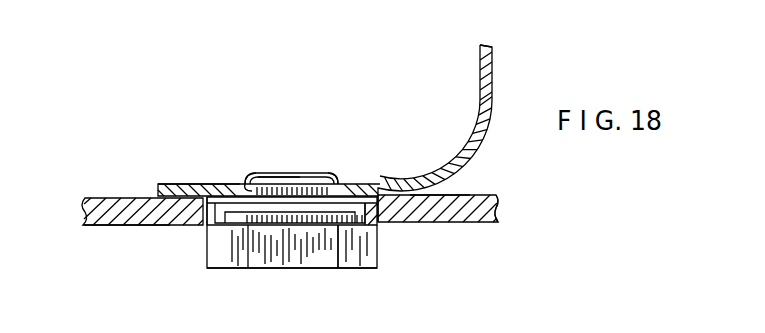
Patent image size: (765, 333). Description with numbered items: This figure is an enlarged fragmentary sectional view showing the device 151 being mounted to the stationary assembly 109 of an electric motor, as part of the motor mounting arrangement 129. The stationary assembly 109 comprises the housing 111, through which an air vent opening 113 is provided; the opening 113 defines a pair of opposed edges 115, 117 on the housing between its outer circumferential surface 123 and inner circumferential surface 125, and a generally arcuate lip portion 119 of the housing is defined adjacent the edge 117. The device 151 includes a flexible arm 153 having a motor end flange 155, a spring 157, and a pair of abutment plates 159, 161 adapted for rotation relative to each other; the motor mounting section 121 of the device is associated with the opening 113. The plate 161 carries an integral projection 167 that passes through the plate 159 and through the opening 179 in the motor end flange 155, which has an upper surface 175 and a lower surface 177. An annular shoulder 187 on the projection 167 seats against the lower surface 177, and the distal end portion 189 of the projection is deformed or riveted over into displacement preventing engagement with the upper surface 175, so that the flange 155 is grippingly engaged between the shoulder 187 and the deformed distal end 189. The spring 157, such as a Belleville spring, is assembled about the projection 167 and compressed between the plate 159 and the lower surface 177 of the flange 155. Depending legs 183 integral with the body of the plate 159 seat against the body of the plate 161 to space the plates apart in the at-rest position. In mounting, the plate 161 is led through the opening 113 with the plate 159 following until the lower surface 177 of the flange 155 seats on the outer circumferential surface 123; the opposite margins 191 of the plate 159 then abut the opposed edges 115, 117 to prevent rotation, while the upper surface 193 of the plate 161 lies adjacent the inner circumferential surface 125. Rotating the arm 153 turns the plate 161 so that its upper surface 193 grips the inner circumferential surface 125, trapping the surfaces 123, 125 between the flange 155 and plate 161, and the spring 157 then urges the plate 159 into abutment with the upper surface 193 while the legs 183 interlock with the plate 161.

The stationary assembly 109 is at (494, 188).
The housing 111 is at (503, 204).
The opening 113 is at (380, 206).
The edge 115 is at (186, 226).
The edge 117 is at (381, 201).
The lip portion 119 is at (430, 195).
The motor mounting section 121 is at (221, 151).
The outer circumferential surface 123 is at (110, 196).
The inner circumferential surface 125 is at (88, 226).
The motor mounting arrangement 129 is at (72, 293).
The device 151 is at (510, 61).
The flexible arm 153 is at (491, 47).
The motor end flange 155 is at (157, 191).
The spring 157 is at (361, 182).
The abutment plate 159 is at (288, 228).
The abutment plate 161 is at (267, 269).
The projection 167 is at (278, 176).
The upper surface 175 is at (167, 186).
The lower surface 177 is at (148, 226).
The opening 179 is at (244, 182).
The legs 183 is at (352, 226).
The shoulder 187 is at (339, 179).
The distal end portion 189 is at (298, 173).
The margins 191 is at (323, 258).
The upper surface 193 is at (253, 226).